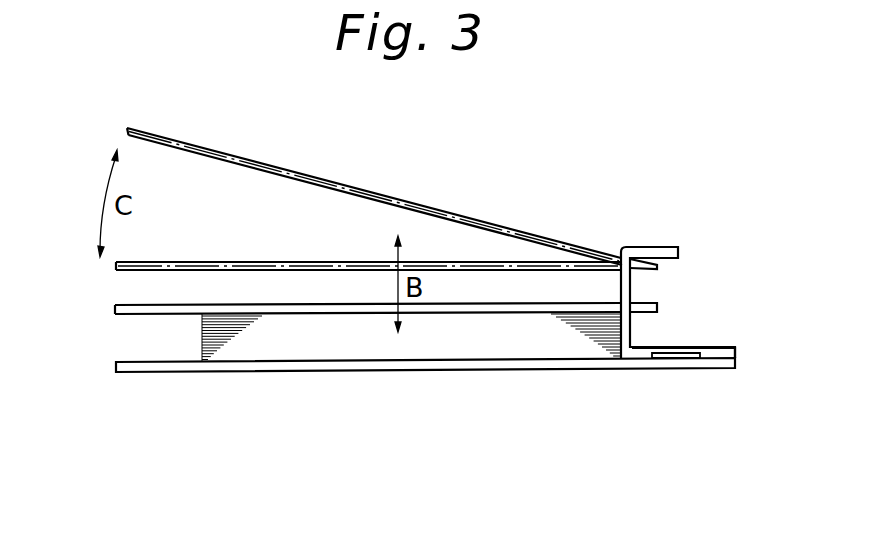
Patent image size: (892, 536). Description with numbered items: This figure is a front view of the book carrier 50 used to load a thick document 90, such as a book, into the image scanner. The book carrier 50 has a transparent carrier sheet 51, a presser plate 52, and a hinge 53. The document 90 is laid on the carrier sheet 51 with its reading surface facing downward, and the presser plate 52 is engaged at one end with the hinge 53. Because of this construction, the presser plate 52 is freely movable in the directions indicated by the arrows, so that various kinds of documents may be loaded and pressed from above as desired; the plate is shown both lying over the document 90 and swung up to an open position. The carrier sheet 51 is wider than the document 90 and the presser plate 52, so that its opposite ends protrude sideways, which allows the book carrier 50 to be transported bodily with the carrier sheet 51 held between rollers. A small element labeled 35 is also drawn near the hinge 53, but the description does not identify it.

The book carrier 50 is at (572, 226).
The transparent carrier sheet 51 is at (115, 366).
The presser plate 52 is at (272, 262).
The hinge 53 is at (687, 347).
The pad 35 is at (680, 359).
The document 90 is at (308, 345).